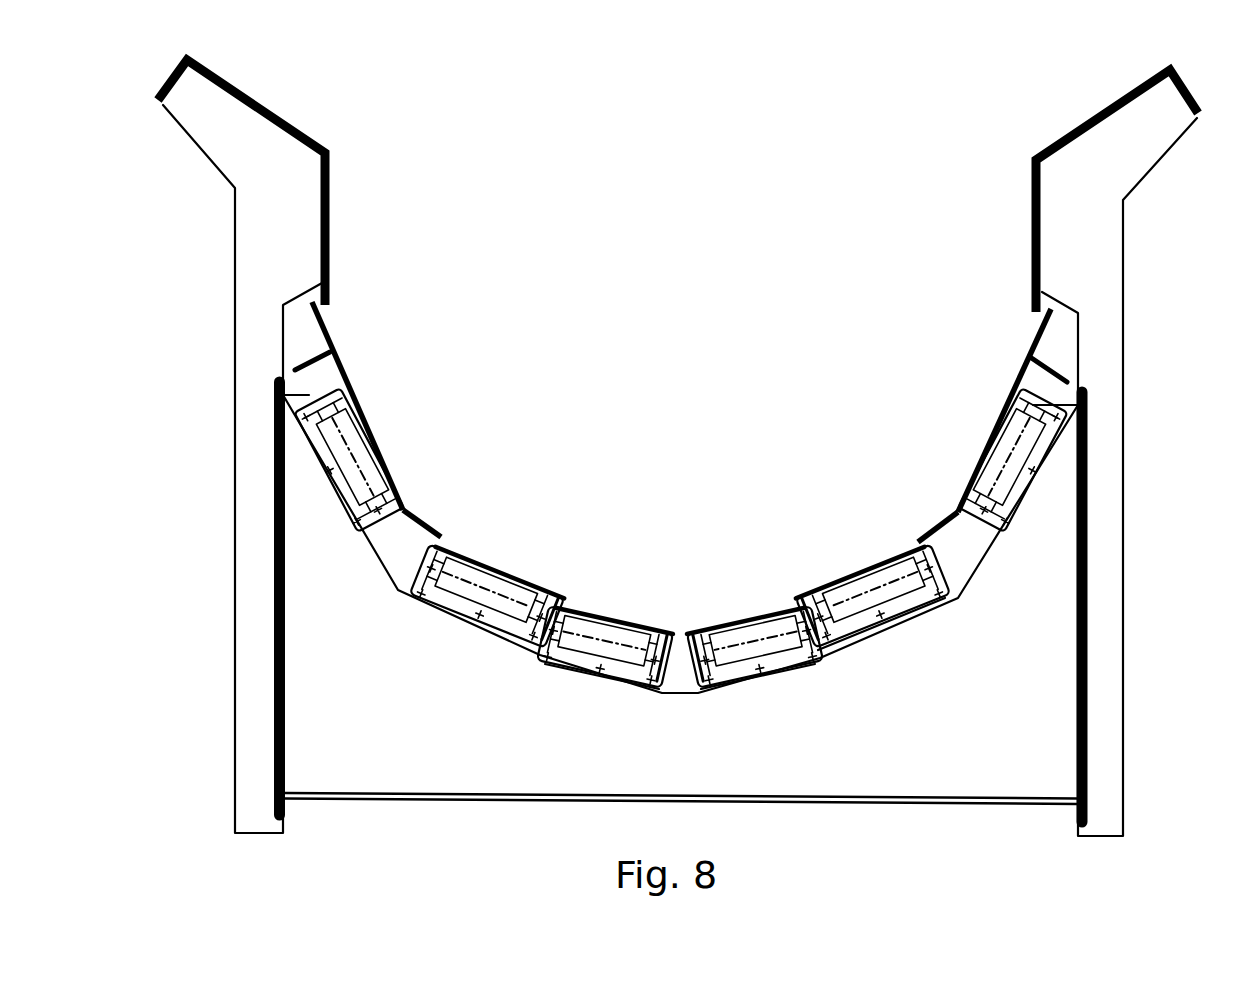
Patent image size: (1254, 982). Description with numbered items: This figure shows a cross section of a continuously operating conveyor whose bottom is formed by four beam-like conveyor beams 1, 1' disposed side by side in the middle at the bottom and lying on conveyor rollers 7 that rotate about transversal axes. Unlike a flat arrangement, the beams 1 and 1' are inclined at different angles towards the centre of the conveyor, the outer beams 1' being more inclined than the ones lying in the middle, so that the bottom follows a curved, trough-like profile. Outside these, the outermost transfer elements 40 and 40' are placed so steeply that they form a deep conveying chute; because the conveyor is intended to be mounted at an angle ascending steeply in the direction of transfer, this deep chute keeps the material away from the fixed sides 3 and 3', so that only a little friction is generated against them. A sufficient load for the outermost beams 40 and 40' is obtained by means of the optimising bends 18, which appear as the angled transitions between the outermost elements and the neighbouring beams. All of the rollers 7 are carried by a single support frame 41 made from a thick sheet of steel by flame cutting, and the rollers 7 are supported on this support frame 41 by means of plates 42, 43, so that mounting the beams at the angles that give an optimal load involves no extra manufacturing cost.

The side 3 is at (278, 182).
The side 3' is at (1076, 191).
The outermost transfer element 40 is at (379, 406).
The outermost transfer element 40' is at (981, 409).
The optimising bend 18 is at (407, 510).
The conveyor beam 1 is at (680, 604).
The conveyor beam 1' is at (680, 568).
The roller 7 is at (447, 583).
The support frame 41 is at (440, 773).
The plate 42 is at (575, 665).
The mounting plate 43 is at (875, 628).